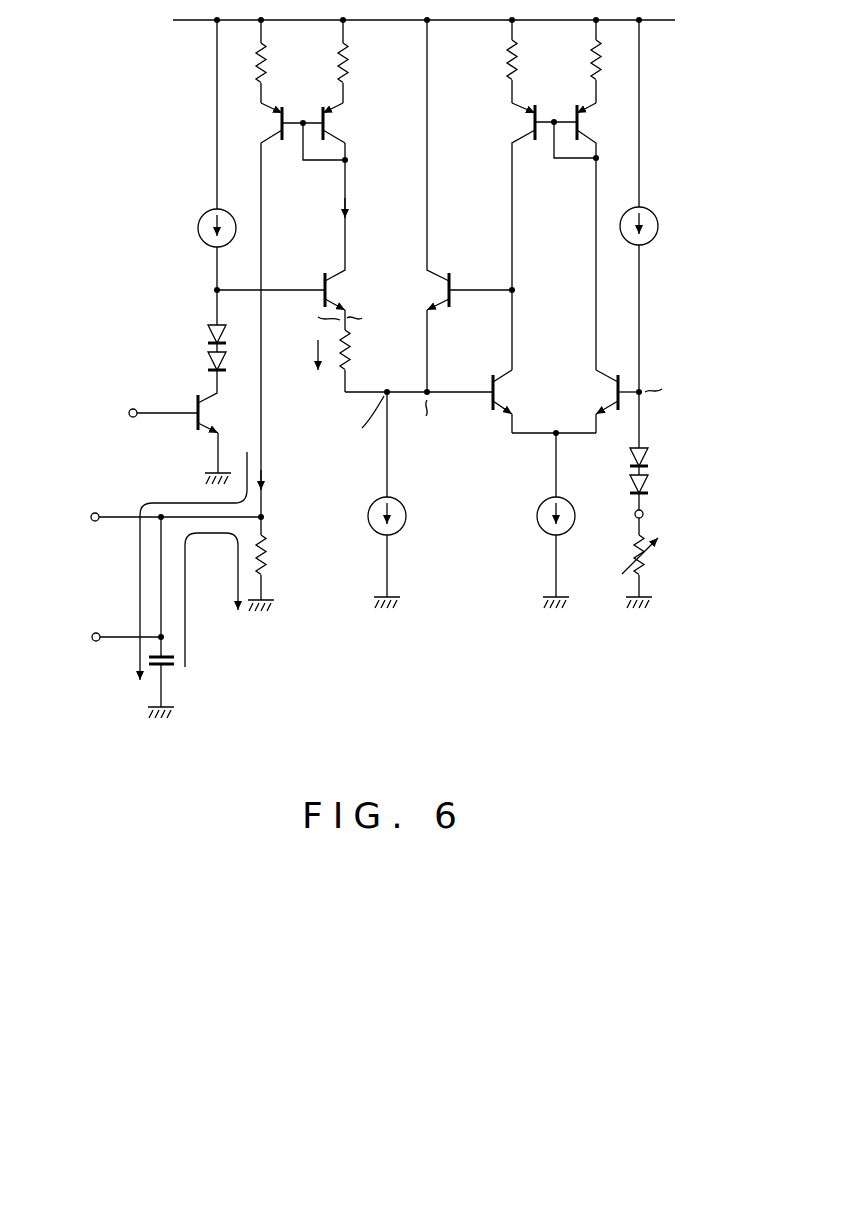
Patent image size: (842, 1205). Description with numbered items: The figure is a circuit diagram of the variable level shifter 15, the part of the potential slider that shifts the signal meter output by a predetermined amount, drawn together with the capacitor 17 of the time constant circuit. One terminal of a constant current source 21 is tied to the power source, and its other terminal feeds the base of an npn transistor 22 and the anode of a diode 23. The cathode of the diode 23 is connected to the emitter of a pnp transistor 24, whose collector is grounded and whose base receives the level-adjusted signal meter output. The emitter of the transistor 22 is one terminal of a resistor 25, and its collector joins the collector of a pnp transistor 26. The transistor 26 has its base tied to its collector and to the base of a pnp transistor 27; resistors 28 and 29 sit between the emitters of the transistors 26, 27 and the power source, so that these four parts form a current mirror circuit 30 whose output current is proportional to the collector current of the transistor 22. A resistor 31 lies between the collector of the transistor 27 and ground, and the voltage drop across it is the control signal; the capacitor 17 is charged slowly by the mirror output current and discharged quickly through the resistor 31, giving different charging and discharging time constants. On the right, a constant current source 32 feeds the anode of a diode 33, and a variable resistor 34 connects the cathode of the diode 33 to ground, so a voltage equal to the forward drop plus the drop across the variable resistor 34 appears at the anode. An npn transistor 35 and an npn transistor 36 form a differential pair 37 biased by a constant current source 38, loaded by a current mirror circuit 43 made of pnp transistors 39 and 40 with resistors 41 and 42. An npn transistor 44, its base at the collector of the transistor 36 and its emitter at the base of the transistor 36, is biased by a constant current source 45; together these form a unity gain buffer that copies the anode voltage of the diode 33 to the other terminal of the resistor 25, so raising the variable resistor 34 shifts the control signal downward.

The variable level shifter 15 is at (133, 107).
The capacitor 17 is at (178, 670).
The constant current source 21 is at (206, 217).
The npn transistor 22 is at (350, 290).
The diode 23 is at (206, 336).
The pnp transistor 24 is at (214, 416).
The resistor 25 is at (351, 361).
The pnp transistor 26 is at (347, 124).
The pnp transistor 27 is at (266, 128).
The resistor 28 is at (350, 68).
The resistor 29 is at (268, 68).
The current mirror circuit 30 is at (311, 149).
The resistor 31 is at (270, 556).
The constant current source 32 is at (658, 220).
The diode 33 is at (655, 464).
The variable resistor 34 is at (659, 560).
The npn transistor 35 is at (611, 366).
The npn transistor 36 is at (503, 368).
The differential pair 37 is at (553, 375).
The constant current source 38 is at (572, 537).
The pnp transistor 39 is at (598, 128).
The pnp transistor 40 is at (510, 124).
The resistor 41 is at (588, 68).
The resistor 42 is at (505, 58).
The current mirror circuit 43 is at (544, 230).
The npn transistor 44 is at (422, 282).
The constant current source 45 is at (407, 517).